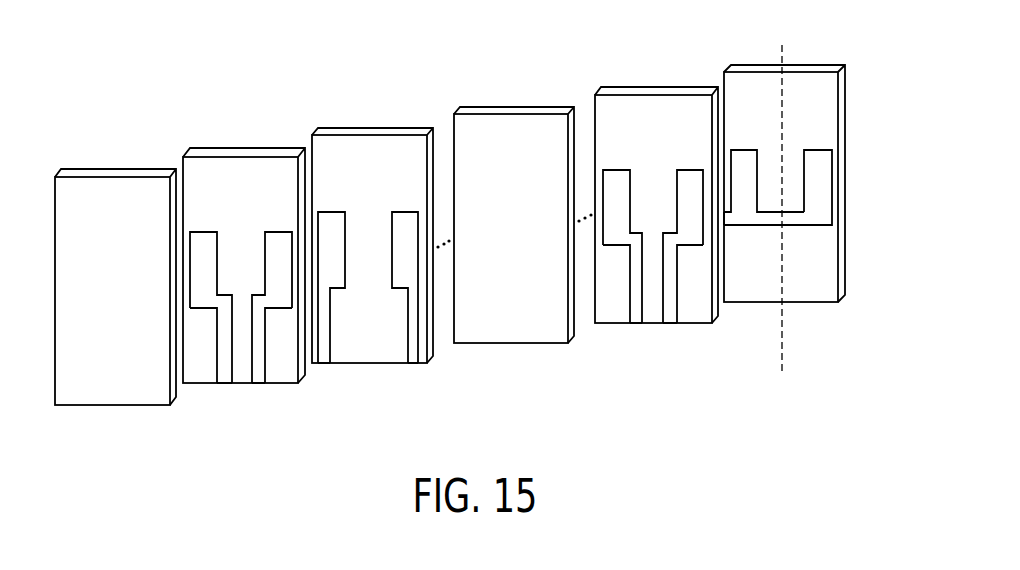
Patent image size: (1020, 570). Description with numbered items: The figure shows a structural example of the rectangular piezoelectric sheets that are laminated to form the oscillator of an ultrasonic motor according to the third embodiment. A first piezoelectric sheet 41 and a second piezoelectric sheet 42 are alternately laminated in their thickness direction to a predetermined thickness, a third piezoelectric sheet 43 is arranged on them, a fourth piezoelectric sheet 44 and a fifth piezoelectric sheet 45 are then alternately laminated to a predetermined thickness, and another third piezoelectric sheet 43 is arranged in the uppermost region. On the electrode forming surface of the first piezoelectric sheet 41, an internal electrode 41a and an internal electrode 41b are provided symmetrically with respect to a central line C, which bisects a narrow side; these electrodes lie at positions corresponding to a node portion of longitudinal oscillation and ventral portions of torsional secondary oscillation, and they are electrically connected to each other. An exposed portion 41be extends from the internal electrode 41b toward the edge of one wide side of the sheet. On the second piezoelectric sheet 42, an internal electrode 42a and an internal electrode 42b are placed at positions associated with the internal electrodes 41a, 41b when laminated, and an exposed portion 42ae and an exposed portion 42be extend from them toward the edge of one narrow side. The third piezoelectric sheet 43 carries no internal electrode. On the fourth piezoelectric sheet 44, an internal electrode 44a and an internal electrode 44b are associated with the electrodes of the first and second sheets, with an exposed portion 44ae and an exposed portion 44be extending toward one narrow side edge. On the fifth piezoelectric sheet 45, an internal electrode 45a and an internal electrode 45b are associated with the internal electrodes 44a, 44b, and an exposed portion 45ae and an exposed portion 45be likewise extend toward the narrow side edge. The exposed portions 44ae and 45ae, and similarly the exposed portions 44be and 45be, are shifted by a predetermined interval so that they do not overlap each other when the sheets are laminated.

The first piezoelectric sheet 41 is at (790, 313).
The internal electrode 41a is at (817, 182).
The internal electrode 41b is at (747, 160).
The exposed portion 41be is at (727, 230).
The second piezoelectric sheet 42 is at (644, 74).
The internal electrode 42a is at (688, 175).
The internal electrode 42b is at (620, 175).
The exposed portion 42ae is at (670, 305).
The exposed portion 42be is at (637, 305).
The third piezoelectric sheet 43 is at (113, 160).
The fourth piezoelectric sheet 44 is at (368, 115).
The internal electrode 44a is at (405, 222).
The internal electrode 44b is at (333, 222).
The exposed portion 44ae is at (413, 350).
The exposed portion 44be is at (324, 352).
The fifth piezoelectric sheet 45 is at (244, 137).
The internal electrode 45a is at (278, 243).
The internal electrode 45b is at (207, 243).
The exposed portion 45ae is at (258, 368).
The exposed portion 45be is at (223, 368).
The central line C is at (781, 221).